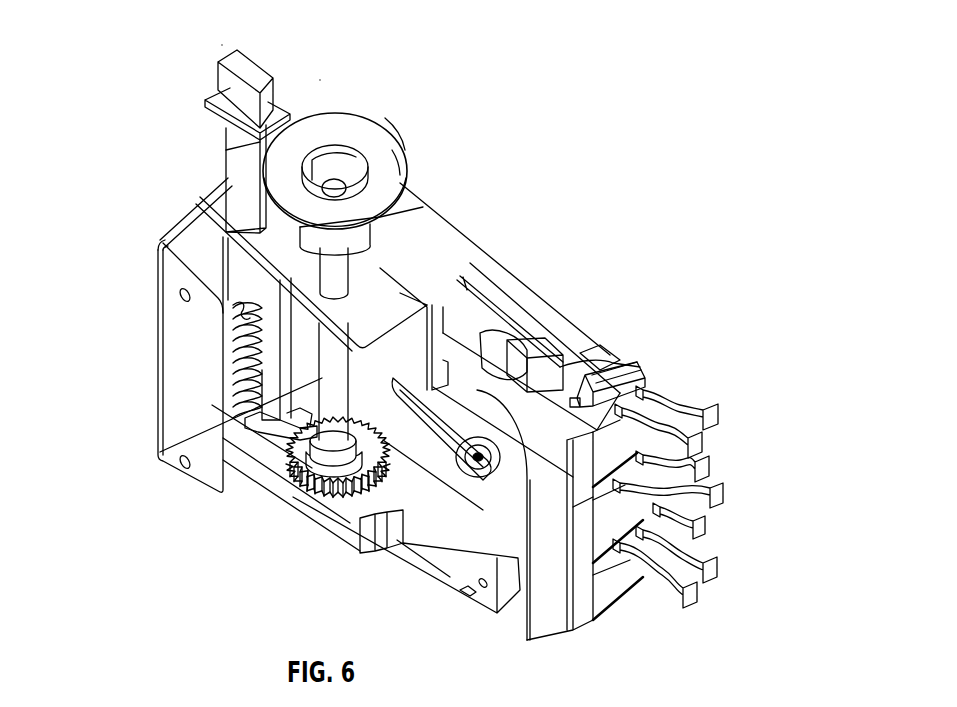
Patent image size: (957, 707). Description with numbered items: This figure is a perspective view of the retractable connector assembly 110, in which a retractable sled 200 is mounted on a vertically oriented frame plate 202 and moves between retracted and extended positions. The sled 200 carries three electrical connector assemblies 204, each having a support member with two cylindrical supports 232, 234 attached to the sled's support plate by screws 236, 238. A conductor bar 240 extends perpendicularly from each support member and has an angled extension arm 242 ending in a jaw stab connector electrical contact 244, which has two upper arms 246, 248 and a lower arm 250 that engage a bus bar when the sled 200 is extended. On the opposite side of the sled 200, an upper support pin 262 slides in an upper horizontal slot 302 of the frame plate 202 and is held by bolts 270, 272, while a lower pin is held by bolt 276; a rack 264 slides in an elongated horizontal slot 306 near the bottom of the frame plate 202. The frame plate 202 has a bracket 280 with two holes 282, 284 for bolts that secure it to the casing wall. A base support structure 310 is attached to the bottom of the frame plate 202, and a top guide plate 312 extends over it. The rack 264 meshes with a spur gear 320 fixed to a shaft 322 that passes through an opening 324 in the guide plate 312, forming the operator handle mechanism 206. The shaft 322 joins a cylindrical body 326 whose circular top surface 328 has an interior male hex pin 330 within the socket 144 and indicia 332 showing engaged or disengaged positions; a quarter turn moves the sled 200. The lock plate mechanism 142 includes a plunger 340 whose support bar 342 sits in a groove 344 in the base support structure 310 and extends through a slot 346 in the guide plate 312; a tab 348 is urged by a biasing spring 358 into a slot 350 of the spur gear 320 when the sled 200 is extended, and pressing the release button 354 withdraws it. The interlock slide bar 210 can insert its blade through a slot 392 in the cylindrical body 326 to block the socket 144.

The retractable connector assembly 110 is at (322, 78).
The lock plate mechanism 142 is at (220, 43).
The socket 144 is at (346, 150).
The retractable sled 200 is at (687, 583).
The frame plate 202 is at (573, 507).
The electrical connector assembly 204 is at (643, 368).
The operator handle mechanism 206 is at (385, 118).
The interlock slide bar 210 is at (693, 513).
The cylindrical support 232 is at (610, 360).
The cylindrical support 234 is at (480, 325).
The screw 236 is at (543, 338).
The screw 238 is at (485, 290).
The conductor bar 240 is at (580, 352).
The angled extension arm 242 is at (633, 358).
The jaw stab connector electrical contact 244 is at (700, 407).
The upper arm 246 is at (673, 440).
The upper arm 248 is at (693, 453).
The lower arm 250 is at (693, 470).
The upper support pin 262 is at (712, 565).
The rack 264 is at (363, 550).
The bolt 270 is at (413, 293).
The bolt 272 is at (593, 560).
The bolt 276 is at (470, 596).
The bracket 280 is at (180, 400).
The hole 282 is at (178, 294).
The hole 284 is at (180, 464).
The upper horizontal slot 302 is at (385, 530).
The elongated horizontal slot 306 is at (460, 550).
The base support structure 310 is at (520, 600).
The top guide plate 312 is at (228, 234).
The spur gear 320 is at (383, 497).
The shaft 322 is at (160, 452).
The opening 324 is at (158, 243).
The cylindrical body 326 is at (423, 207).
The circular top surface 328 is at (322, 120).
The male hex pin 330 is at (243, 146).
The indicia 332 is at (304, 180).
The plunger 340 is at (232, 150).
The support bar 342 is at (234, 380).
The groove 344 is at (267, 425).
The slot 346 is at (210, 222).
The tab 348 is at (225, 488).
The slot 350 is at (282, 420).
The release button 354 is at (215, 85).
The biasing spring 358 is at (232, 357).
The slot 392 is at (392, 151).